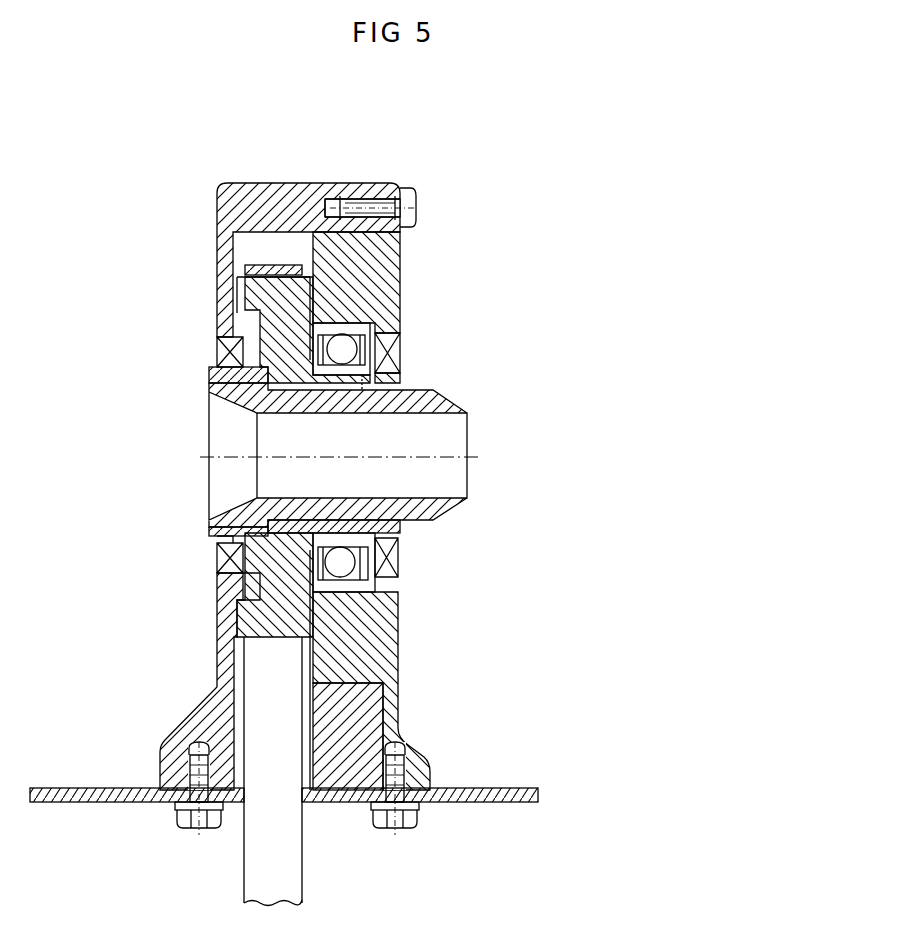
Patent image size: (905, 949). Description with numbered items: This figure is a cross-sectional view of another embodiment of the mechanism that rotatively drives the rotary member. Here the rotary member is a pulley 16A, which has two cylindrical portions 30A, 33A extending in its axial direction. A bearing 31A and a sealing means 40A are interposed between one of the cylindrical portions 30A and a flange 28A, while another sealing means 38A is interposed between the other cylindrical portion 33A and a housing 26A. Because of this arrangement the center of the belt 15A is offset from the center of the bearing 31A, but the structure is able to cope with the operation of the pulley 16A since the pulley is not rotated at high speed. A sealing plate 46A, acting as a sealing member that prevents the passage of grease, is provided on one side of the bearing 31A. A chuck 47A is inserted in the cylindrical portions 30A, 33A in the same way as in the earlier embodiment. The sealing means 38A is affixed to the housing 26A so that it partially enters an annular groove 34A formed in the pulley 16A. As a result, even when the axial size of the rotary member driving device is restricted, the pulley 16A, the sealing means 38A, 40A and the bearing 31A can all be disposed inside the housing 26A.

The housing 26A is at (262, 202).
The sealing plate 46A is at (304, 340).
The pulley 16A is at (313, 307).
The cylindrical portion 33A is at (217, 373).
The chuck 47A is at (237, 392).
The sealing means 38A is at (222, 560).
The annular groove 34A is at (253, 573).
The cylindrical portion 30A is at (400, 528).
The sealing means 40A is at (400, 558).
The bearing 31A is at (397, 615).
The flange 28A is at (375, 657).
The belt 15A is at (280, 883).